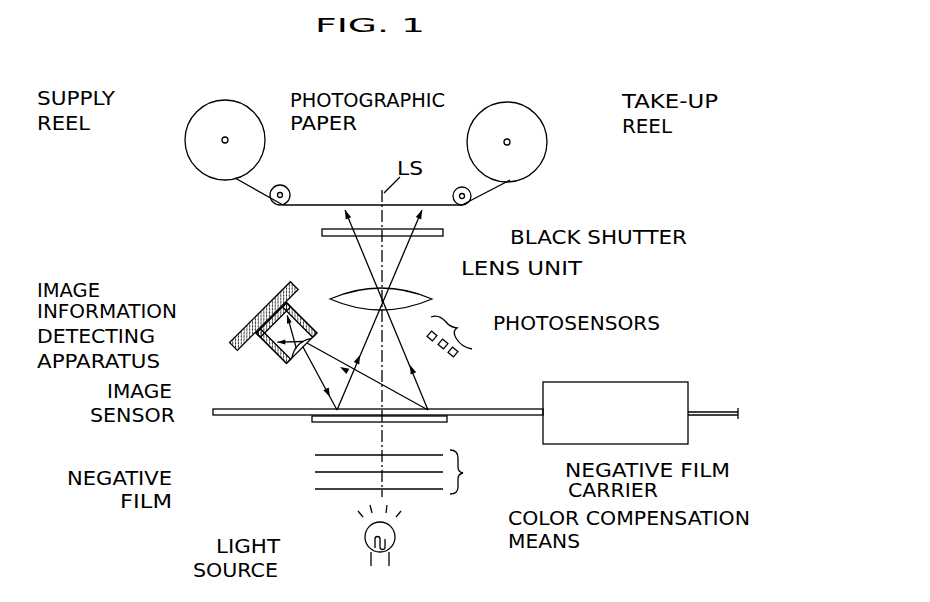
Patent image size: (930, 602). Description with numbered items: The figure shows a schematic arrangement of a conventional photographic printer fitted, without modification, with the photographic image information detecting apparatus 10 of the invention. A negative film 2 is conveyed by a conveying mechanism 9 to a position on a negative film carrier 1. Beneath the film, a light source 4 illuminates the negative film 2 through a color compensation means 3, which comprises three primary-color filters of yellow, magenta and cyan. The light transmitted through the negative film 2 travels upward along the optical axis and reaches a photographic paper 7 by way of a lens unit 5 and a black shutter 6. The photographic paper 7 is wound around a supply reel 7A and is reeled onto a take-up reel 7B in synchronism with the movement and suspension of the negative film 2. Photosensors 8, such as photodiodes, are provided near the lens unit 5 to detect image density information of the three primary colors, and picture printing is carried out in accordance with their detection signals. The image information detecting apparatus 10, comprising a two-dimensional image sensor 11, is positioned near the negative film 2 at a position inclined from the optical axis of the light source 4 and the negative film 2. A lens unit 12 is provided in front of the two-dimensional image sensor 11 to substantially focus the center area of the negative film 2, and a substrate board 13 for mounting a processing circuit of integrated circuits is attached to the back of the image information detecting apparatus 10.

The negative film carrier 1 is at (438, 422).
The negative film 2 is at (242, 416).
The color compensation means 3 is at (466, 476).
The light source 4 is at (365, 538).
The lens unit 5 is at (413, 289).
The black shutter 6 is at (444, 232).
The photographic paper 7 is at (300, 203).
The supply reel 7A is at (188, 127).
The take-up reel 7B is at (548, 130).
The photosensors 8 is at (453, 334).
The conveying mechanism 9 is at (690, 383).
The image information detecting apparatus 10 is at (269, 340).
The two-dimensional image sensor 11 is at (273, 346).
The lens unit 12 is at (286, 333).
The substrate board 13 is at (227, 337).